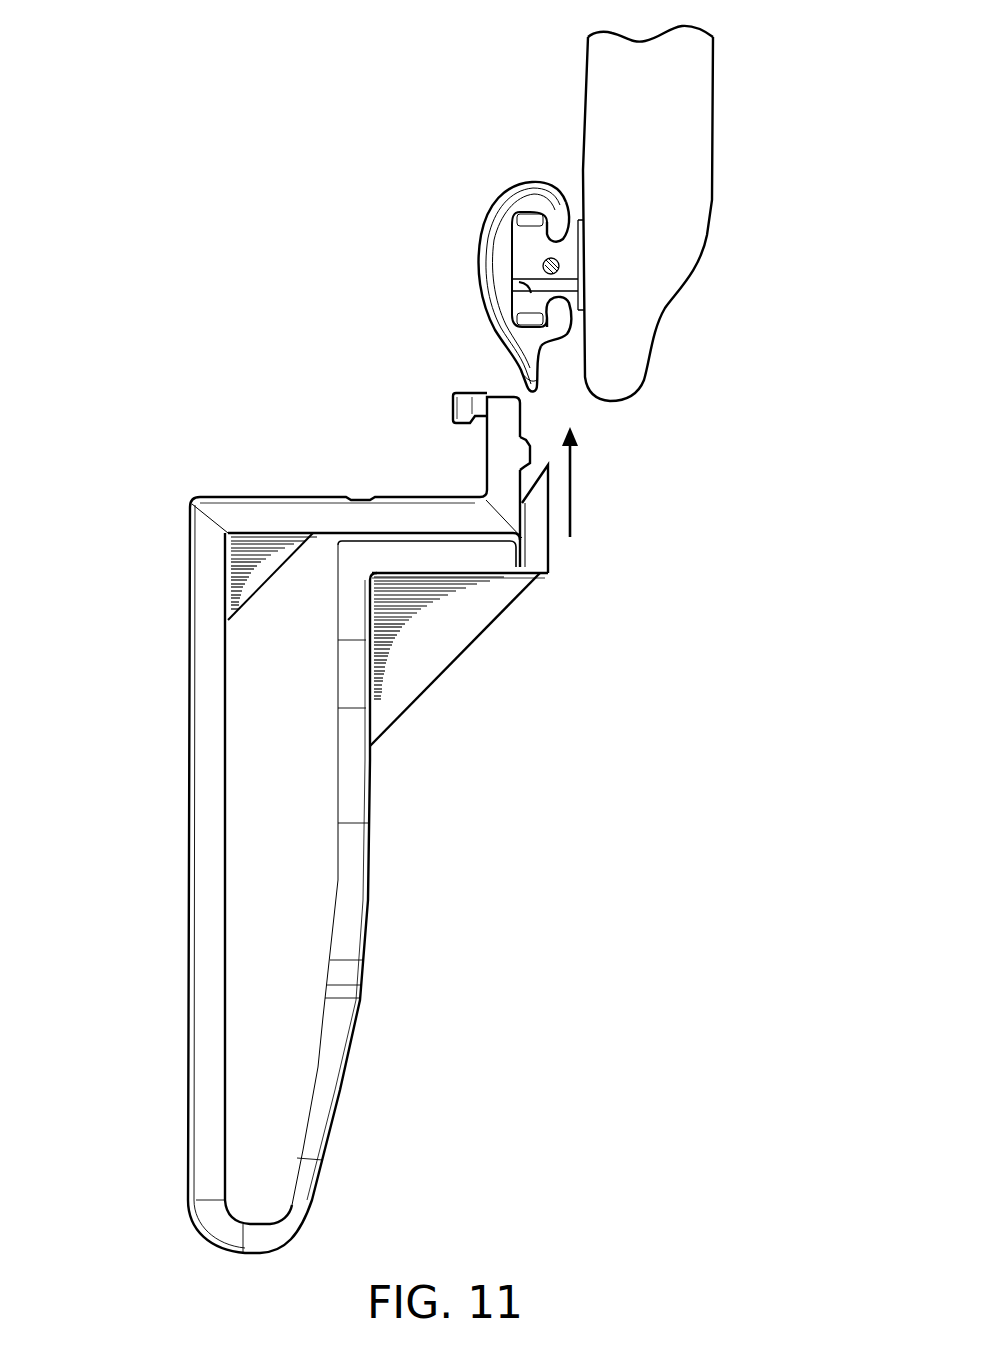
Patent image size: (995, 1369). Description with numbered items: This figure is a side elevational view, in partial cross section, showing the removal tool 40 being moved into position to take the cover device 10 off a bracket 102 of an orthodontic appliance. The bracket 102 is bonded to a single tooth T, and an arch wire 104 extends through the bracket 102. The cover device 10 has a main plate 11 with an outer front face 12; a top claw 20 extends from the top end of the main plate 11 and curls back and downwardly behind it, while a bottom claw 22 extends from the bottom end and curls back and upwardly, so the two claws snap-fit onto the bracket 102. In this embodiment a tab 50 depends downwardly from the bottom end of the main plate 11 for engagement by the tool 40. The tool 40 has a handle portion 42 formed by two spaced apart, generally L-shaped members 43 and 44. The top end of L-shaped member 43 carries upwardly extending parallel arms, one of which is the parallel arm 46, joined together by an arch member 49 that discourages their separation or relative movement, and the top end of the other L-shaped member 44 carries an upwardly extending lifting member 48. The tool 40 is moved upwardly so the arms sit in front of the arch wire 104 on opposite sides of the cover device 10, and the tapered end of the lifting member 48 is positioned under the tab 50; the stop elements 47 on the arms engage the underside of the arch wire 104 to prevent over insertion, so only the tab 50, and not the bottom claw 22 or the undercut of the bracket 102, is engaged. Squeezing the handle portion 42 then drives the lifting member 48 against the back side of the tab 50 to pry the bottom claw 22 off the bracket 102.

The tooth T is at (583, 82).
The cover device 10 is at (553, 244).
The main plate 11 is at (470, 316).
The outer front face 12 is at (483, 243).
The top claw 20 is at (530, 183).
The bottom claw 22 is at (552, 350).
The tab 50 is at (528, 382).
The bracket 102 is at (530, 293).
The arch wire 104 is at (556, 260).
The removal tool 40 is at (350, 813).
The handle portion 42 is at (272, 875).
The L-shaped member 43 is at (190, 778).
The L-shaped member 44 is at (370, 878).
The parallel arm 46 is at (493, 484).
The stop element 47 is at (528, 447).
The lifting member 48 is at (522, 495).
The arch member 49 is at (453, 403).